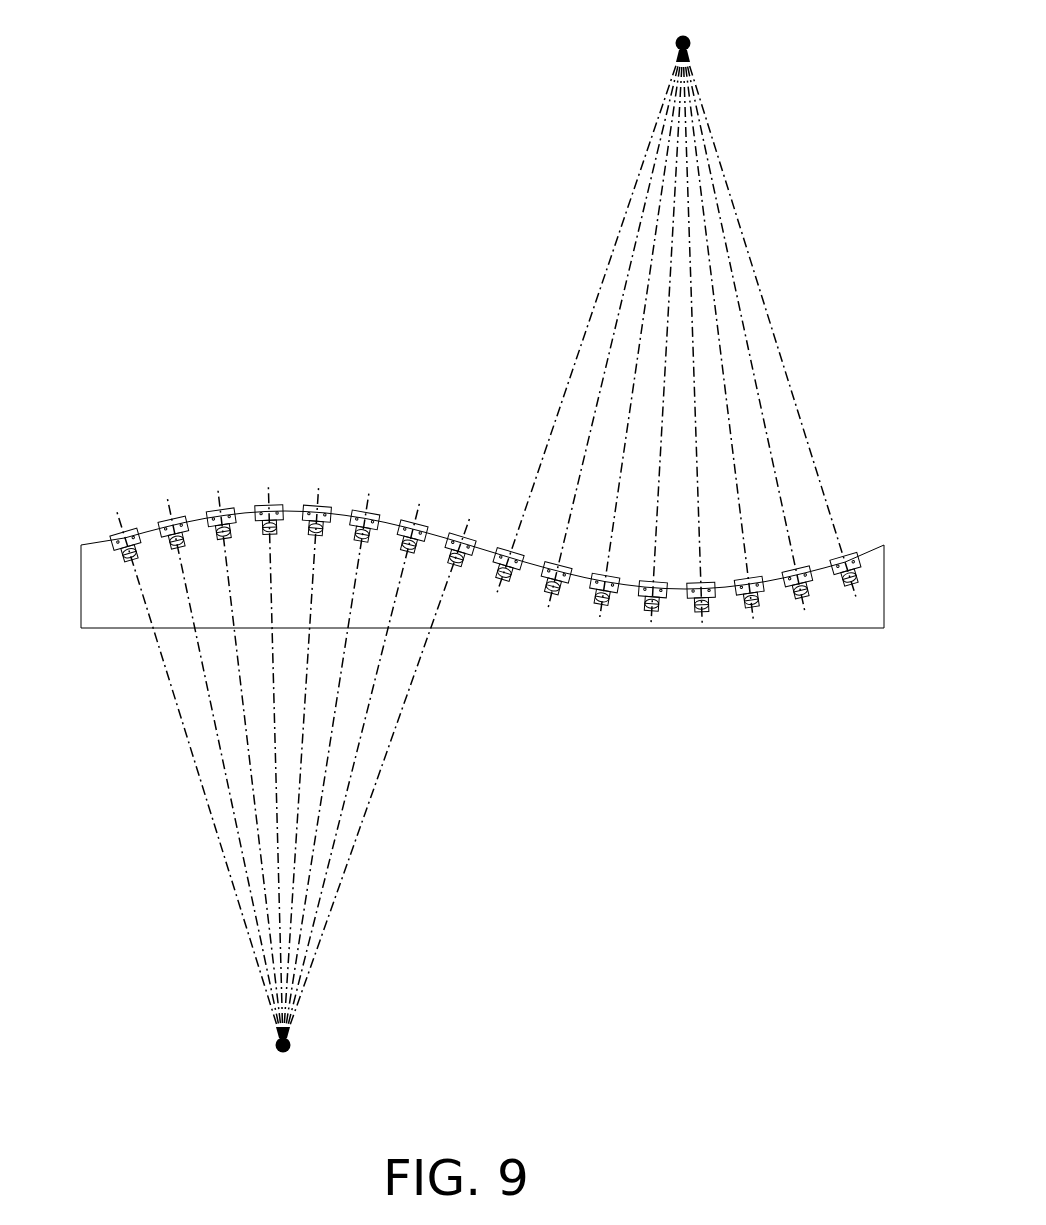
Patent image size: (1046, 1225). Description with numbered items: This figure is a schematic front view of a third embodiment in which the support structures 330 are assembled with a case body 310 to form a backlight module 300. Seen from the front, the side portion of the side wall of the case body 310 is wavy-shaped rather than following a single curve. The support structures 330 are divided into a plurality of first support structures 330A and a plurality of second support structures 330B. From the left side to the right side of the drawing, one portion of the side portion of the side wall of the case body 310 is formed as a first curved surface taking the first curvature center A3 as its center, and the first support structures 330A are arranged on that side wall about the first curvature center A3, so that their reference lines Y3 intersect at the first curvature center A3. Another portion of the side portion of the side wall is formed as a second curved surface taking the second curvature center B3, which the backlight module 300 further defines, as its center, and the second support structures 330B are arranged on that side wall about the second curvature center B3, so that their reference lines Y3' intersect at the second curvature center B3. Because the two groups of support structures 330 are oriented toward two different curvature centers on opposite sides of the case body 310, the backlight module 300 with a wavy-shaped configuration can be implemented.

The backlight module 300 is at (500, 534).
The case body 310 is at (851, 620).
The support structures 330 is at (457, 535).
The first support structures 330A is at (122, 525).
The second support structures 330B is at (850, 553).
The first curvature center A3 is at (299, 1053).
The second curvature center B3 is at (666, 38).
The reference lines of the first support structures Y3 is at (294, 753).
The reference lines of the second support structures Y3' is at (677, 346).